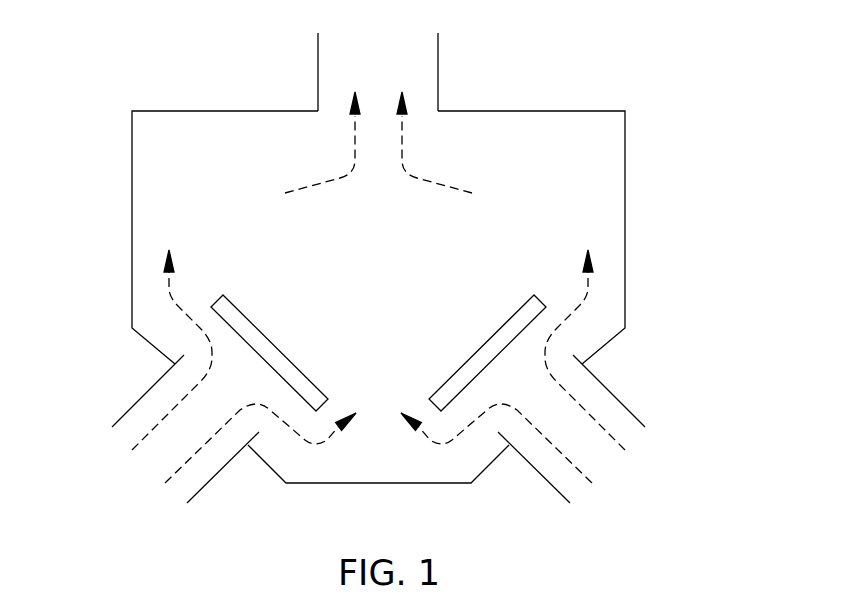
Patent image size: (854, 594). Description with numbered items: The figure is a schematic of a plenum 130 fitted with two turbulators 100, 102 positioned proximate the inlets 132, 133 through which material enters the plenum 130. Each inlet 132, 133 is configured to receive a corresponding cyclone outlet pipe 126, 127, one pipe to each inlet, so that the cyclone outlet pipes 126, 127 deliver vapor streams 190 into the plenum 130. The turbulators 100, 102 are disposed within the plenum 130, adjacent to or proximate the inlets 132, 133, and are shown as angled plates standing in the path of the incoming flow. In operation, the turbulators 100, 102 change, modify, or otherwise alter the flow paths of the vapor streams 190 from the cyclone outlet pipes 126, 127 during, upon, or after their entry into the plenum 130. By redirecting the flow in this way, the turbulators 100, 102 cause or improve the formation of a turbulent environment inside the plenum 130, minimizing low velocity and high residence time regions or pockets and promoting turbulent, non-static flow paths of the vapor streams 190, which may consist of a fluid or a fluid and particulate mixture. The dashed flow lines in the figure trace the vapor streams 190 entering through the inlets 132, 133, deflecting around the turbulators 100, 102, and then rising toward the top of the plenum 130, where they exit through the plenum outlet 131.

The turbulator 100 is at (267, 337).
The turbulator 102 is at (490, 337).
The cyclone outlet pipe 126 is at (219, 474).
The cyclone outlet pipe 127 is at (538, 474).
The plenum 130 is at (625, 155).
The plenum outlet 131 is at (438, 58).
The inlet 132 is at (172, 381).
The inlet 133 is at (585, 381).
The vapor stream 190 is at (587, 283).